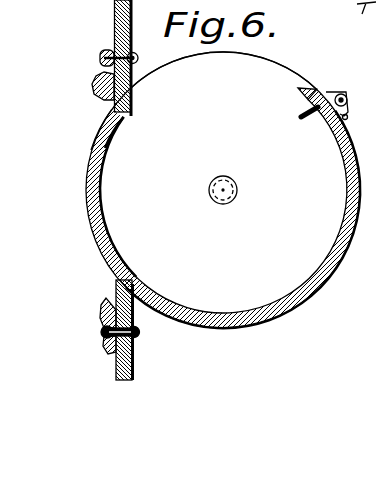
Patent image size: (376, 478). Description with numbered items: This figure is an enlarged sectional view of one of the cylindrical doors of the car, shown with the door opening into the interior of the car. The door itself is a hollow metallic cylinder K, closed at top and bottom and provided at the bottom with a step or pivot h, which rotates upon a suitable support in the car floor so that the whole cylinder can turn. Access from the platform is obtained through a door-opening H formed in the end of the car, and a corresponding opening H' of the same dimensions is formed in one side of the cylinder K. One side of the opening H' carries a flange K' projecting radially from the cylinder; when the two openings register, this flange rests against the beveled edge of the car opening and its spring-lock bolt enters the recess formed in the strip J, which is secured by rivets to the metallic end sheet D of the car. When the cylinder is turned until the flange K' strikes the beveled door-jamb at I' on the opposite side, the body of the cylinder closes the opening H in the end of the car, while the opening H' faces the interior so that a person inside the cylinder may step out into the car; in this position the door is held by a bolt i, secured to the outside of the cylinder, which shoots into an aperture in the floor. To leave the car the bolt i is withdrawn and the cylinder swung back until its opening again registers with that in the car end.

The door-opening H is at (200, 190).
The opening in cylindrical door H' is at (224, 70).
The hollow metallic cylinder K is at (223, 208).
The flange K' is at (86, 124).
The metallic sheet D is at (142, 364).
The beveled door-jamb I' is at (95, 75).
The strip J is at (102, 312).
The bolt i is at (326, 101).
The step or pivot h is at (224, 179).